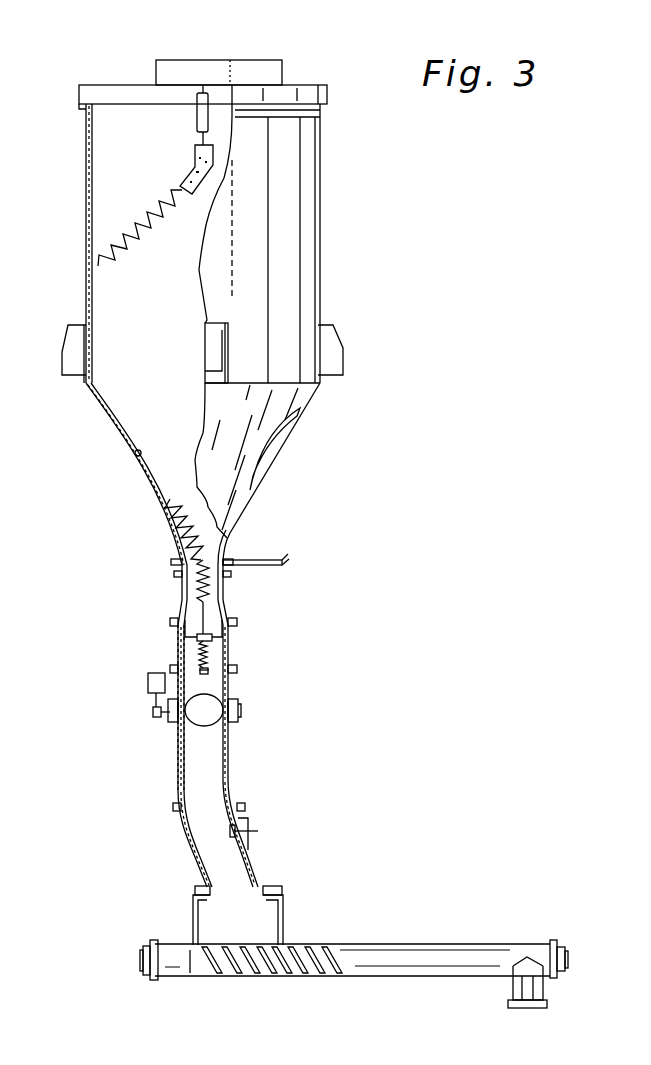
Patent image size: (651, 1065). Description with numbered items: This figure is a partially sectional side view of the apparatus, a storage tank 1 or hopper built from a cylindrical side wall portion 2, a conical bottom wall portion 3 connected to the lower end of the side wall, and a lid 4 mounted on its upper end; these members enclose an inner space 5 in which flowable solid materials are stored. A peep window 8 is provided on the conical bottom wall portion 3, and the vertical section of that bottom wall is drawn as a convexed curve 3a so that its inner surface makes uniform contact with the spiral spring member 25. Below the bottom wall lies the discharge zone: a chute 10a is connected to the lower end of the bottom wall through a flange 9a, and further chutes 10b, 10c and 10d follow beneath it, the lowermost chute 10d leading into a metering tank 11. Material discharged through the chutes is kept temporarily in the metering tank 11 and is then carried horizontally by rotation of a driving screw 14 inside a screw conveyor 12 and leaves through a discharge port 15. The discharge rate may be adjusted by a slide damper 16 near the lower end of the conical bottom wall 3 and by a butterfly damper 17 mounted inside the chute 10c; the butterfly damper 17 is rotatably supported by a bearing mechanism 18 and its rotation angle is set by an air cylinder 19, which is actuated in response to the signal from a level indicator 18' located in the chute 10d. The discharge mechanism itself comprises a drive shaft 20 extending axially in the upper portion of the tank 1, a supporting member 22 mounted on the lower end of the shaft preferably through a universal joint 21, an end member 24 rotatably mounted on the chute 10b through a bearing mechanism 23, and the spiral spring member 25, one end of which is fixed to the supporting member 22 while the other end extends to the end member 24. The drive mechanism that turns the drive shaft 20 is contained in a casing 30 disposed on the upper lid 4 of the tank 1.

The storage tank 1 is at (80, 403).
The cylindrical side wall portion 2 is at (85, 273).
The conical bottom wall portion 3 is at (126, 432).
The convexed curve 3a is at (136, 456).
The lid 4 is at (110, 85).
The inner space 5 is at (162, 304).
The peep window 8 is at (277, 441).
The flange 9a is at (173, 573).
The chute 10a is at (230, 596).
The chute 10b is at (230, 640).
The chute 10c is at (236, 749).
The chute 10d is at (188, 833).
The metering tank 11 is at (193, 915).
The screw conveyor 12 is at (382, 976).
The driving screw 14 is at (317, 944).
The discharge port 15 is at (538, 1009).
The slide damper 16 is at (256, 560).
The butterfly damper 17 is at (195, 722).
The bearing mechanism 18 is at (176, 715).
The level indicator 18' is at (276, 837).
The air cylinder 19 is at (148, 677).
The drive shaft 20 is at (197, 129).
The universal joint 21 is at (195, 152).
The supporting member 22 is at (207, 197).
The bearing mechanism 23 is at (187, 638).
The end member 24 is at (185, 601).
The spiral spring member 25 is at (98, 236).
The casing 30 is at (257, 60).